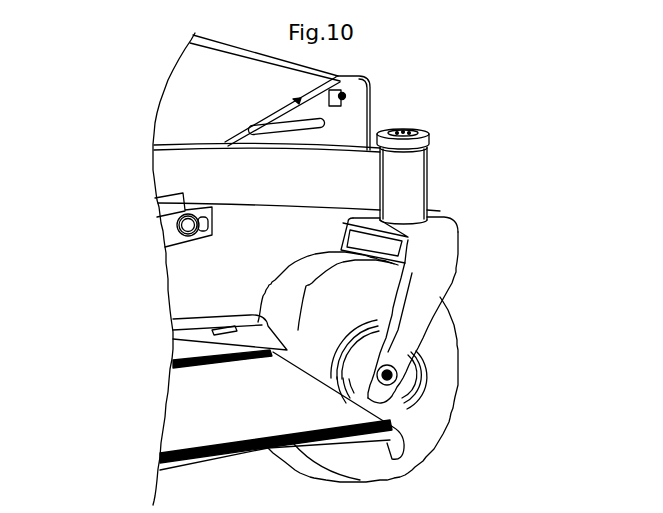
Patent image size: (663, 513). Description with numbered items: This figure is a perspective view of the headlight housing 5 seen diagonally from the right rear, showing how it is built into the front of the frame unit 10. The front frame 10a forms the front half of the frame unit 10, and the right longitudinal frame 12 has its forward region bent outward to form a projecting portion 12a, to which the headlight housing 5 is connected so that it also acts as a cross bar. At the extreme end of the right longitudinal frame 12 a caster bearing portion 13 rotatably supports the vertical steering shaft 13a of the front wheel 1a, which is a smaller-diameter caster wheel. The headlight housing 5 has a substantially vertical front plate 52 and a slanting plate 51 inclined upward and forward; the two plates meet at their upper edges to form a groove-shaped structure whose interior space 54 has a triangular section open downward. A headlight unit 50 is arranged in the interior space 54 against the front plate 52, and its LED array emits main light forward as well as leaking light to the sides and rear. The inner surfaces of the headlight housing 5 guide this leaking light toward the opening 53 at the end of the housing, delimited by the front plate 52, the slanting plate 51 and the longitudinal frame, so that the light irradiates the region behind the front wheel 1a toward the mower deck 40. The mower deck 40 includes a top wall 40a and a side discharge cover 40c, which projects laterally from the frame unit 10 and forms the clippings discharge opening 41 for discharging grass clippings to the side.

The front wheel 1a is at (453, 368).
The headlight housing 5 is at (336, 119).
The frame unit 10 is at (219, 126).
The front frame 10a is at (182, 141).
The right longitudinal frame 12 is at (297, 227).
The projecting portion 12a is at (281, 205).
The caster bearing portion 13 is at (433, 162).
The vertical steering shaft 13a is at (406, 126).
The mower deck 40 is at (282, 361).
The top wall 40a is at (177, 320).
The side discharge cover 40c is at (193, 422).
The clippings discharge opening 41 is at (366, 445).
The headlight unit 50 is at (342, 108).
The slanting plate 51 is at (187, 80).
The front plate 52 is at (372, 91).
The opening 53 is at (291, 141).
The interior space 54 is at (330, 130).